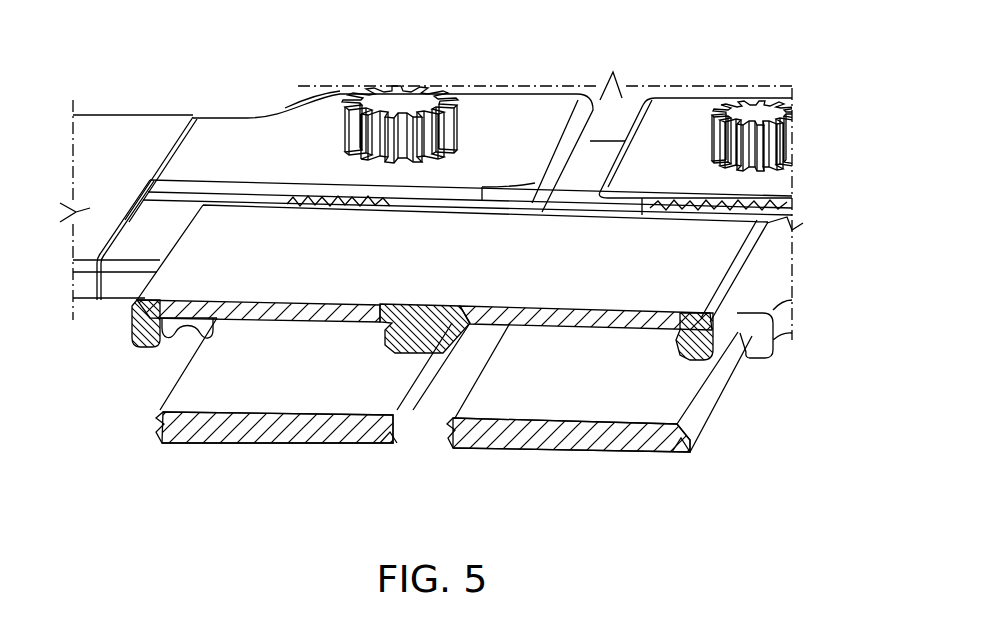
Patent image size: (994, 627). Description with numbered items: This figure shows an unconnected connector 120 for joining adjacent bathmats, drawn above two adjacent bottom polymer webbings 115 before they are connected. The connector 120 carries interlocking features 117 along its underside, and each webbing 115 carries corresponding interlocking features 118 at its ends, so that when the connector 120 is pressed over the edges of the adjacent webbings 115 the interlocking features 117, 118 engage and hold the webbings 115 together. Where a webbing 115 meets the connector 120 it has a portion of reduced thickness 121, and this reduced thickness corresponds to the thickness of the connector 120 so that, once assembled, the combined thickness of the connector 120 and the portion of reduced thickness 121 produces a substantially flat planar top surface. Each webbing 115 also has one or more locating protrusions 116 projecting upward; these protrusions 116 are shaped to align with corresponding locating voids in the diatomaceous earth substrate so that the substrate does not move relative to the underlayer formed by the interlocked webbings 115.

The bottom polymer webbing 115 is at (507, 125).
The locating protrusion 116 is at (323, 200).
The interlocking feature of the connector 117 is at (388, 345).
The interlocking feature of the webbing 118 is at (160, 427).
The connector 120 is at (137, 128).
The portion of reduced thickness 121 is at (223, 395).